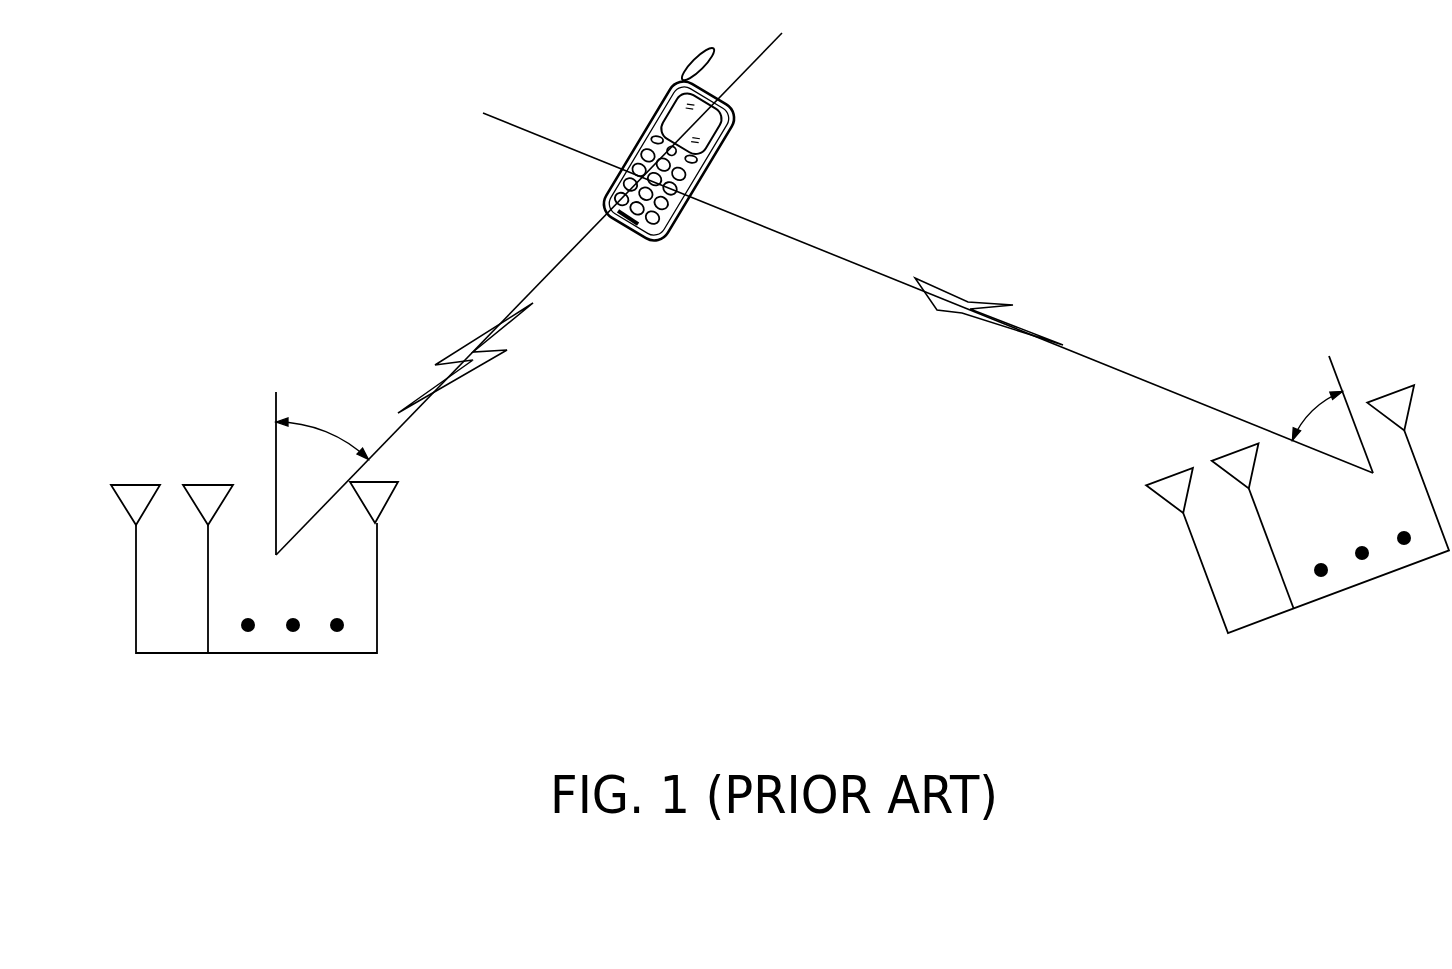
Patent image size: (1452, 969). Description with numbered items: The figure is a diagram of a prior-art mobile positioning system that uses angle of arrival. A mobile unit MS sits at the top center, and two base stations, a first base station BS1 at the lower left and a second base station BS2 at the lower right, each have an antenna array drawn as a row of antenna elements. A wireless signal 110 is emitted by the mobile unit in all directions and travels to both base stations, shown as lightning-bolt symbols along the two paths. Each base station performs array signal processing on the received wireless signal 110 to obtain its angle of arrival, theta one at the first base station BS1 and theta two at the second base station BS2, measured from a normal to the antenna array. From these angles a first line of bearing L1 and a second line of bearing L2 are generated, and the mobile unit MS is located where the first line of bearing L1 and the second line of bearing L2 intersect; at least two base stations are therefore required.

The wireless signal 110 is at (483, 365).
The mobile unit MS is at (680, 159).
The first base station BS1 is at (254, 548).
The second base station BS2 is at (1297, 494).
The first line of bearing L1 is at (540, 278).
The second line of bearing L2 is at (913, 279).